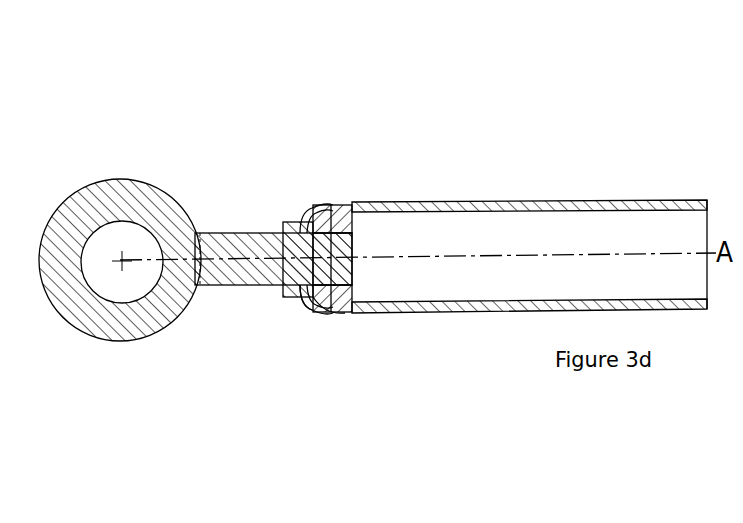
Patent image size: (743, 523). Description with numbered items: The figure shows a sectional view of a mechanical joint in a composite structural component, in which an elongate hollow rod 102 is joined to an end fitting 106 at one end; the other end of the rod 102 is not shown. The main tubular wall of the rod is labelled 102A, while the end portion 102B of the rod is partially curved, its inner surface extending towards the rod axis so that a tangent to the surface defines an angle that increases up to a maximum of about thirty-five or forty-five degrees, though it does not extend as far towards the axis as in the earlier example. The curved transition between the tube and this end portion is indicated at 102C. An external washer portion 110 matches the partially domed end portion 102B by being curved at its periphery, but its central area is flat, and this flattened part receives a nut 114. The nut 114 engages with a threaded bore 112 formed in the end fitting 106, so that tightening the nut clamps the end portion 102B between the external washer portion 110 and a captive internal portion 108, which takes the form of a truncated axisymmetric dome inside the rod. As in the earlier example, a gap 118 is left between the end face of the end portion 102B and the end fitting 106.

The hollow rod 102 is at (432, 90).
The tube 102A is at (468, 213).
The end portion 102B is at (352, 450).
The joint region 102C is at (328, 302).
The end fitting 106 is at (117, 341).
The captive internal portion 108 is at (345, 308).
The external washer portion 110 is at (311, 207).
The threaded bore 112 is at (235, 275).
The nut 114 is at (291, 221).
The gap 118 is at (306, 294).